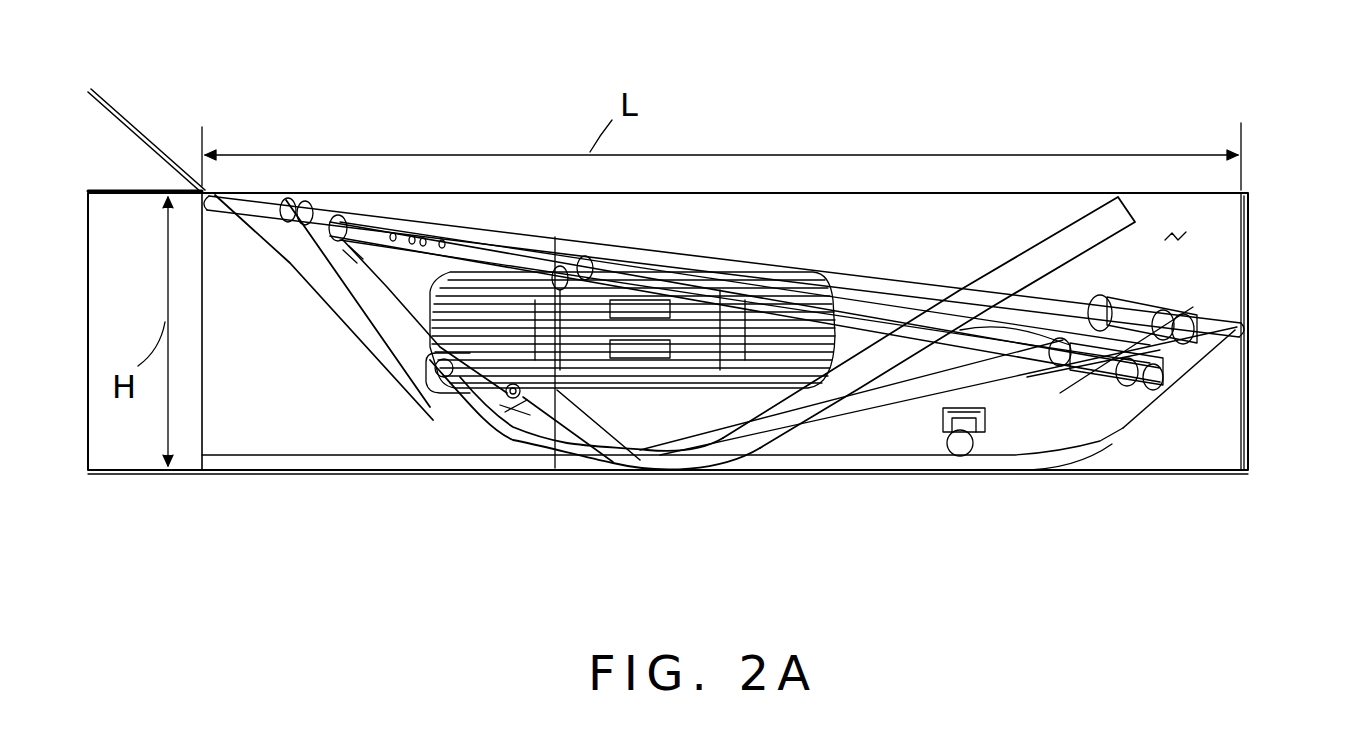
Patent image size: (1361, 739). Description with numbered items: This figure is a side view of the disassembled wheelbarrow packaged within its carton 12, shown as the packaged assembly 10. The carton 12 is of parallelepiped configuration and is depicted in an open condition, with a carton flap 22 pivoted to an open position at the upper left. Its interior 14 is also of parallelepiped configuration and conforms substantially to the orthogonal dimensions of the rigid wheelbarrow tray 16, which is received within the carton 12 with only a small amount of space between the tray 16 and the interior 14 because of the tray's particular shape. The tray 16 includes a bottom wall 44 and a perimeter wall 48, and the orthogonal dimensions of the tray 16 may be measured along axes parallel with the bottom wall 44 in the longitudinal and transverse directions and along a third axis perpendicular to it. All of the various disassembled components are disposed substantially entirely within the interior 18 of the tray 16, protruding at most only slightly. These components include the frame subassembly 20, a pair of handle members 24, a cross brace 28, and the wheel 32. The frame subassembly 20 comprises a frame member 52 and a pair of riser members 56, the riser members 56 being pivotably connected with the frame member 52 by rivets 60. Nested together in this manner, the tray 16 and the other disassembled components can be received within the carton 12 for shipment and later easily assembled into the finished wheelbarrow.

The hoist assembly 10 is at (793, 160).
The carton 12 is at (905, 190).
The interior 14 is at (1190, 228).
The wheelbarrow tray 16 is at (1134, 440).
The interior 18 is at (866, 428).
The frame subassembly 20 is at (1060, 224).
The carton flaps 22 is at (147, 133).
The handle members 24 is at (1209, 308).
The cross brace 28 is at (947, 447).
The wheel 32 is at (640, 455).
The bottom wall 44 is at (760, 470).
The perimeter wall 48 is at (395, 372).
The frame member 52 is at (529, 440).
The riser members 56 is at (619, 411).
The rivets 60 is at (500, 420).